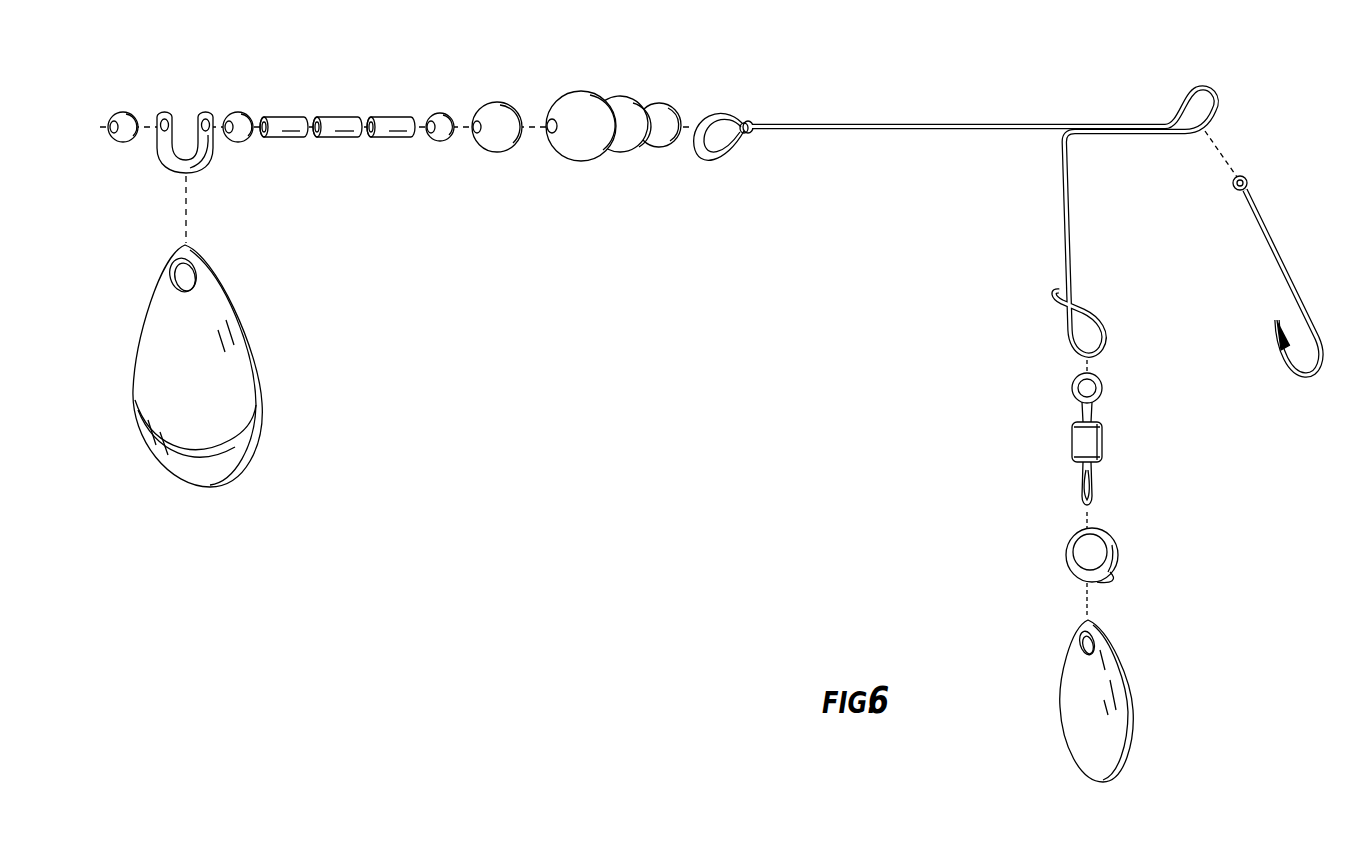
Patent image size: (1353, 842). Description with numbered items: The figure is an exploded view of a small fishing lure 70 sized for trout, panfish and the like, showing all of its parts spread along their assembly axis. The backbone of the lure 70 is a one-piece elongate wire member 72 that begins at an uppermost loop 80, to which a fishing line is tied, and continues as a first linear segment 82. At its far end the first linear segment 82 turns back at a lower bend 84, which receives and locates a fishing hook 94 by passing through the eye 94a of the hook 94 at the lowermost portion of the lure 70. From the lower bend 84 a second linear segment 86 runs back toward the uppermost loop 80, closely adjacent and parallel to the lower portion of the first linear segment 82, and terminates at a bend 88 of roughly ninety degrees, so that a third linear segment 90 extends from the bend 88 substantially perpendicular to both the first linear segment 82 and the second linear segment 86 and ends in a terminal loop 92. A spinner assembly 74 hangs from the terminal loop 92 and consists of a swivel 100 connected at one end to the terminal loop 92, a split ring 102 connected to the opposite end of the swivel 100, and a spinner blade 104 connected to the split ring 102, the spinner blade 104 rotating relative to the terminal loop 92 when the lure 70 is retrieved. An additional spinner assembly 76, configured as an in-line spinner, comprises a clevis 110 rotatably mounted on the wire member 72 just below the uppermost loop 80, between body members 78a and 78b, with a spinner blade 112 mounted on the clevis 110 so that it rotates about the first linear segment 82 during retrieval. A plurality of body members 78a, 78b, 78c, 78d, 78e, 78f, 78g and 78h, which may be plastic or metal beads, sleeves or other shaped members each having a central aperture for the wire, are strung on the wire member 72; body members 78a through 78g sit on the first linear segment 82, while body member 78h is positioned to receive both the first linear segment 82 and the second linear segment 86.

The lure 70 is at (594, 243).
The one-piece elongate wire member 72 is at (1000, 167).
The spinner assembly 74 is at (1091, 536).
The additional spinner assembly 76 is at (246, 366).
The body member 78a is at (128, 112).
The body member 78b is at (242, 112).
The body member 78c is at (290, 116).
The body member 78d is at (341, 116).
The body member 78e is at (395, 116).
The body member 78f is at (446, 113).
The body member 78g is at (500, 102).
The body member 78h is at (613, 97).
The uppermost loop 80 is at (720, 162).
The first linear segment 82 is at (927, 123).
The lower bend 84 is at (1211, 91).
The second linear segment 86 is at (1122, 135).
The bend 88 is at (1058, 132).
The third linear segment 90 is at (1062, 248).
The terminal loop 92 is at (1106, 333).
The fishing hook 94 is at (1287, 256).
The eye 94a is at (1247, 181).
The swivel 100 is at (1102, 438).
The split ring 102 is at (1118, 553).
The spinner blade 104 is at (1122, 704).
The clevis 110 is at (212, 160).
The spinner blade 112 is at (283, 408).